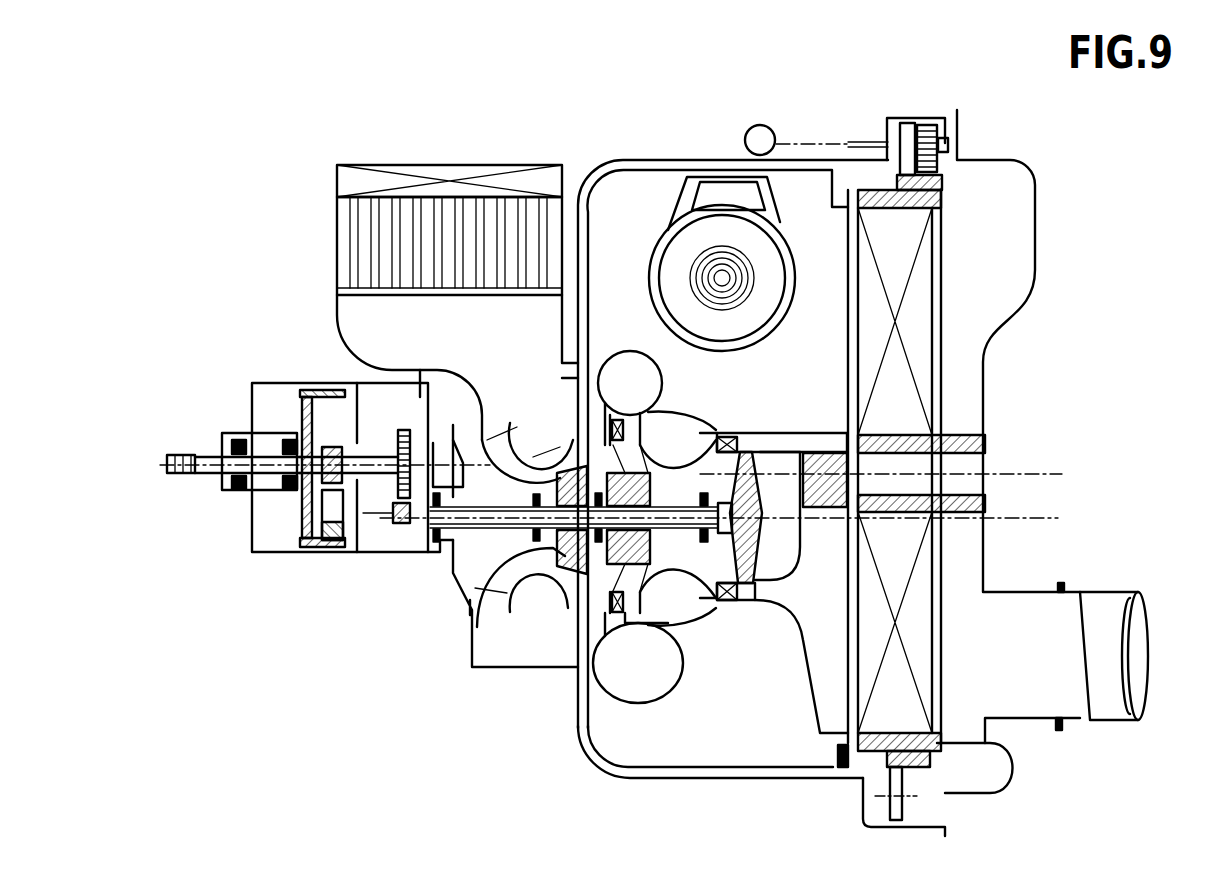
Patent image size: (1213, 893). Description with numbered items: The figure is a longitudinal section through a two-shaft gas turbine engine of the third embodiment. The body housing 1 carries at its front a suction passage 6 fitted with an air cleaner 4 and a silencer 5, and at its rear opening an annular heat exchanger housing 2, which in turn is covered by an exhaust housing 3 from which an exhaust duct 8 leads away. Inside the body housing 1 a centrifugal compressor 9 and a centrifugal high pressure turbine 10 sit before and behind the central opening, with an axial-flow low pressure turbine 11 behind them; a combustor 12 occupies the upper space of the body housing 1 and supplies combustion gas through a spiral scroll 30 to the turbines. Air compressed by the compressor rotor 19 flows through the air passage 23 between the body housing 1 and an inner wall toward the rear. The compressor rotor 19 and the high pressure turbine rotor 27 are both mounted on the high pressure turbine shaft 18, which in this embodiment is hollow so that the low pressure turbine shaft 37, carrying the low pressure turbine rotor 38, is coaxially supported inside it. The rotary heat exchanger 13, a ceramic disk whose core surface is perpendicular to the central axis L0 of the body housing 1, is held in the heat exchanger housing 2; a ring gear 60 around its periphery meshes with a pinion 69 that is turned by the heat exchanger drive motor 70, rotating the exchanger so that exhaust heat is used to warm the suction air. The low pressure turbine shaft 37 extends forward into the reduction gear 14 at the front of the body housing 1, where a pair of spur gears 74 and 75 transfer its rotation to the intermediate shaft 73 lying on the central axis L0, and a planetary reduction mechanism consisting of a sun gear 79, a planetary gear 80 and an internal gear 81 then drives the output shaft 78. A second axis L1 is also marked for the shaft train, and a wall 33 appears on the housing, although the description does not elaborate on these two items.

The body housing 1 is at (672, 160).
The heat exchanger housing 2 is at (913, 120).
The exhaust housing 3 is at (992, 156).
The air cleaner 4 is at (337, 178).
The silencer 5 is at (337, 228).
The suction passage 6 is at (337, 320).
The exhaust duct 8 is at (1107, 592).
The centrifugal compressor 9 is at (570, 443).
The centrifugal high pressure turbine 10 is at (650, 452).
The axial-flow low pressure turbine 11 is at (744, 402).
The combustor 12 is at (662, 233).
The rotary type heat exchanger 13 is at (948, 256).
The reduction gear 14 is at (286, 390).
The high pressure turbine shaft 18 is at (520, 553).
The compressor rotor 19 is at (566, 568).
The air passage 23 is at (637, 772).
The high pressure turbine rotor 27 is at (650, 566).
The spiral scroll 30 is at (684, 662).
The partition wall 33 is at (798, 650).
The low pressure turbine shaft 37 is at (434, 568).
The low pressure turbine rotor 38 is at (760, 452).
The ring gear 60 is at (925, 780).
The pinion 69 is at (932, 125).
The heat exchanger drive motor 70 is at (766, 125).
The intermediate shaft 73 is at (370, 460).
The spur gear 74 is at (402, 526).
The spur gear 75 is at (410, 433).
The output shaft 78 is at (215, 460).
The sun gear 79 is at (332, 447).
The planetary gear 80 is at (340, 548).
The internal gear 81 is at (313, 548).
The central axis of the body housing L0 is at (1016, 472).
The shaft axis L1 is at (1016, 522).